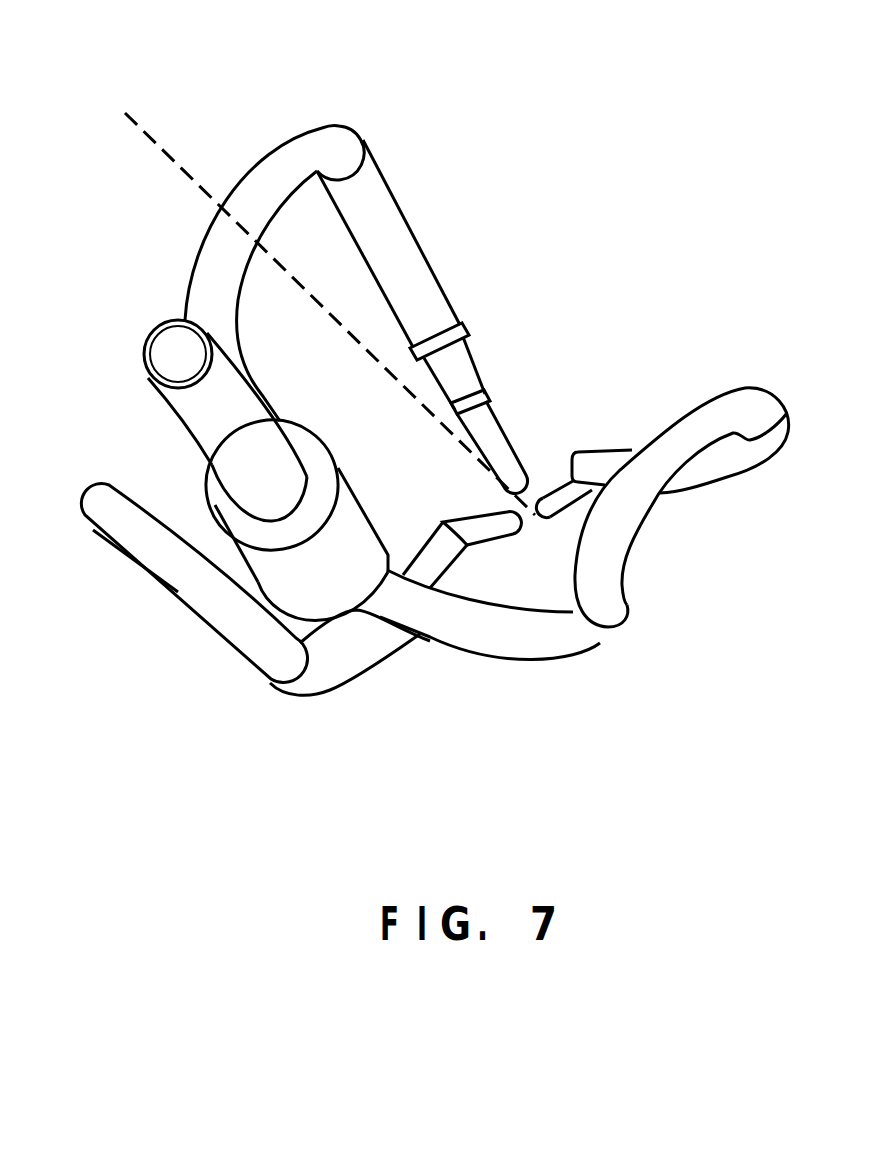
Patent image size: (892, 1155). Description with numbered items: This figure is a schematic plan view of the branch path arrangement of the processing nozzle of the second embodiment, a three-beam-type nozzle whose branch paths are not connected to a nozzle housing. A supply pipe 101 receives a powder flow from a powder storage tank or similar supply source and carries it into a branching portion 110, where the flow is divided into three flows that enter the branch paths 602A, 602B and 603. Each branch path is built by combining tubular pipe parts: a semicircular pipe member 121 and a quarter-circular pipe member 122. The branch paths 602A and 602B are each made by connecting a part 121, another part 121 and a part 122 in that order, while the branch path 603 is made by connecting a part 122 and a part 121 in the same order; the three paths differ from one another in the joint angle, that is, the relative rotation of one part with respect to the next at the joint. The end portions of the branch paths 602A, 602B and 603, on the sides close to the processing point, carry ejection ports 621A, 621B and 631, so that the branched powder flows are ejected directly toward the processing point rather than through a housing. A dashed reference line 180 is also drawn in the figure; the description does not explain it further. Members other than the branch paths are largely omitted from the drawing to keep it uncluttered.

The optical axis / dashed reference line 180 is at (152, 133).
The branch path 602B is at (413, 72).
The branch path 602A is at (742, 732).
The branch path 603 is at (343, 757).
The semicircular pipe member 121 is at (248, 385).
The quarter-circular pipe member 122 is at (365, 185).
The ejection port 621A is at (560, 482).
The ejection port 621B is at (487, 437).
The ejection port 631 is at (488, 527).
The supply pipe 101 is at (177, 415).
The branching portion 110 is at (217, 507).